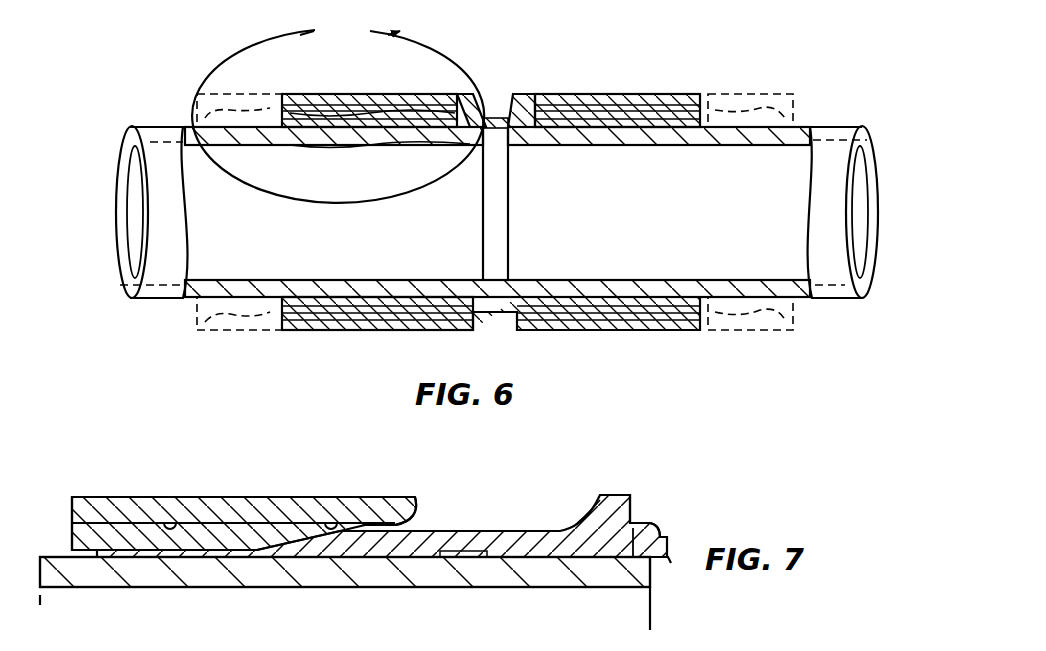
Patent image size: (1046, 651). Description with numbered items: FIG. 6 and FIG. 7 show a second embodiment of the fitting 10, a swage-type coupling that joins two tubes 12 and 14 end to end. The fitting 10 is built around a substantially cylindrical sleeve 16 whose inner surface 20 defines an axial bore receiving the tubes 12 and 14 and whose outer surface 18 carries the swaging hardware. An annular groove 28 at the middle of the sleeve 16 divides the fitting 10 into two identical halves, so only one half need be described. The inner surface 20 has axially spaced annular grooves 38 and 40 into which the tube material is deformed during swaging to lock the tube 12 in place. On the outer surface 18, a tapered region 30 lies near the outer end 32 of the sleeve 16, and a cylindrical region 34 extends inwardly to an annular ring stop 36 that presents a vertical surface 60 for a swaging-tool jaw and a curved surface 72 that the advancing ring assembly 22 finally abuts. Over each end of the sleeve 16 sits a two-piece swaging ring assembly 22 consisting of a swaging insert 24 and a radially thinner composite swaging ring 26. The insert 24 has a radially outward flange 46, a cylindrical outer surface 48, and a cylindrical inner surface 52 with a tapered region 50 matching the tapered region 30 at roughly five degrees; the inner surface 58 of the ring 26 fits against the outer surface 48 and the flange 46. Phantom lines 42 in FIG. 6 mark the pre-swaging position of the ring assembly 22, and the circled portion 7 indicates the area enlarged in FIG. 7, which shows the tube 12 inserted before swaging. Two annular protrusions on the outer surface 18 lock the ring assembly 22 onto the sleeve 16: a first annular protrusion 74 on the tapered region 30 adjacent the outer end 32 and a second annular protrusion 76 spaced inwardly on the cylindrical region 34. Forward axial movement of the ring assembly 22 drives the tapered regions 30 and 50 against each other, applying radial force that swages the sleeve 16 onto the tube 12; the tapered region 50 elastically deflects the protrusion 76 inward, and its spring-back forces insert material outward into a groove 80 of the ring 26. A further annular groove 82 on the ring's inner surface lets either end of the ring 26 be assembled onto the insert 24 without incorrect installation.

In FIG. 6, the detail view circle 7 is at (338, 113).
In FIG. 6, the fitting 10 is at (800, 64).
In FIG. 7, the fitting 10 is at (708, 452).
In FIG. 6, the tube 12 is at (152, 128).
In FIG. 7, the tube 12 is at (50, 557).
In FIG. 6, the tube 14 is at (845, 126).
In FIG. 6, the sleeve 16 is at (523, 94).
In FIG. 7, the sleeve 16 is at (672, 530).
In FIG. 6, the outer surface 18 is at (397, 97).
In FIG. 7, the outer surface 18 is at (457, 531).
In FIG. 6, the inner surface 20 is at (341, 140).
In FIG. 7, the inner surface 20 is at (577, 557).
In FIG. 6, the swaging ring assembly 22 is at (655, 86).
In FIG. 7, the swaging ring assembly 22 is at (265, 455).
In FIG. 6, the swaging insert 24 is at (290, 98).
In FIG. 7, the swaging insert 24 is at (86, 497).
In FIG. 6, the swaging ring 26 is at (422, 93).
In FIG. 7, the swaging ring 26 is at (398, 500).
In FIG. 6, the annular groove 28 is at (494, 110).
In FIG. 7, the annular groove 28 is at (655, 517).
In FIG. 7, the tapered region 30 is at (298, 547).
In FIG. 7, the outer end 32 is at (232, 556).
In FIG. 7, the cylindrical region 34 is at (533, 537).
In FIG. 7, the annular ring stop 36 is at (613, 495).
In FIG. 7, the annular groove 38 is at (418, 557).
In FIG. 7, the annular groove 40 is at (483, 557).
In FIG. 6, the phantom lines 42 is at (216, 92).
In FIG. 7, the flange 46 is at (73, 498).
In FIG. 7, the cylindrical outer surface 48 is at (222, 515).
In FIG. 7, the tapered region 50 is at (332, 560).
In FIG. 7, the cylindrical inner surface 52 is at (100, 553).
In FIG. 7, the inner surface 58 is at (260, 547).
In FIG. 7, the vertical surface 60 is at (638, 497).
In FIG. 7, the curved surface 72 is at (578, 522).
In FIG. 7, the first annular protrusion 74 is at (332, 518).
In FIG. 7, the second annular protrusion 76 is at (505, 530).
In FIG. 7, the groove 80 is at (365, 515).
In FIG. 7, the annular groove 82 is at (172, 519).